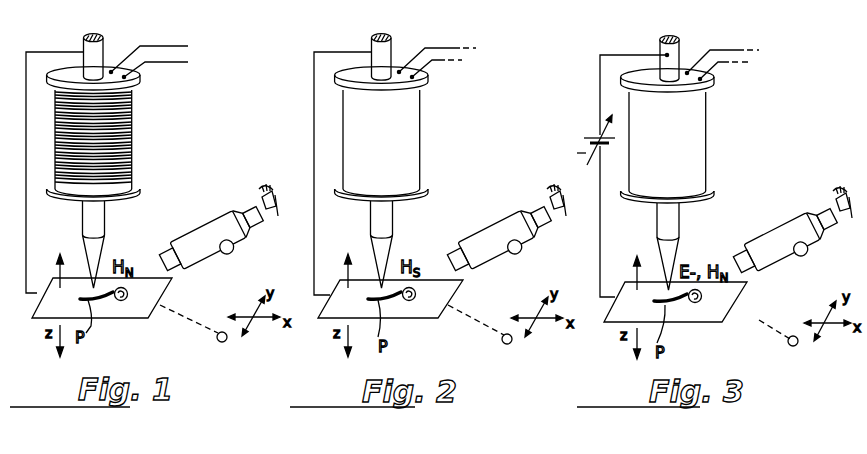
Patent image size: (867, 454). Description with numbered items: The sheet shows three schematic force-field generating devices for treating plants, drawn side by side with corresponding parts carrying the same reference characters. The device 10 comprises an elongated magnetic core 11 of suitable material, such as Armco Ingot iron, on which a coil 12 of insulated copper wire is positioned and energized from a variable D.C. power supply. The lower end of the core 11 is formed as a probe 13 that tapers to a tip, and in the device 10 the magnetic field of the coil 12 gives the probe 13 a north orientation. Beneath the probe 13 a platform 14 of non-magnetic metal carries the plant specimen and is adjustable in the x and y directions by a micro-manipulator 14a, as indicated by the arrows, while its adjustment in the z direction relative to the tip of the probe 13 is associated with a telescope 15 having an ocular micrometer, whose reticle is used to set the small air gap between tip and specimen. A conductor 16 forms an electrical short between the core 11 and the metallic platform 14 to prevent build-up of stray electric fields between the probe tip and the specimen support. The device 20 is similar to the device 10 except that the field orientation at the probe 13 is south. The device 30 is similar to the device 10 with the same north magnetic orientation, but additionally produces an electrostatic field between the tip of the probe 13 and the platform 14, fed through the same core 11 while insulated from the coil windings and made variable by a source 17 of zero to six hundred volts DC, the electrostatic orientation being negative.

In FIG. 1, the device 10 is at (182, 136).
In FIG. 1, the magnetic core 11 is at (98, 48).
In FIG. 2, the magnetic core 11 is at (403, 45).
In FIG. 3, the magnetic core 11 is at (696, 49).
In FIG. 1, the coil 12 is at (125, 108).
In FIG. 2, the coil 12 is at (402, 134).
In FIG. 3, the coil 12 is at (693, 136).
In FIG. 1, the probe 13 is at (97, 249).
In FIG. 2, the probe 13 is at (405, 244).
In FIG. 3, the probe 13 is at (694, 246).
In FIG. 1, the platform 14 is at (158, 291).
In FIG. 2, the platform 14 is at (411, 299).
In FIG. 3, the platform 14 is at (693, 304).
In FIG. 1, the micro-manipulator 14a is at (222, 342).
In FIG. 2, the micro-manipulator 14a is at (493, 347).
In FIG. 3, the micro-manipulator 14a is at (795, 356).
In FIG. 1, the telescope 15 is at (210, 232).
In FIG. 2, the telescope 15 is at (505, 231).
In FIG. 3, the telescope 15 is at (791, 231).
In FIG. 1, the conductor 16 is at (26, 130).
In FIG. 2, the conductor 16 is at (321, 173).
In FIG. 3, the source 17 is at (565, 140).
In FIG. 2, the device 20 is at (373, 153).
In FIG. 3, the device 30 is at (643, 156).